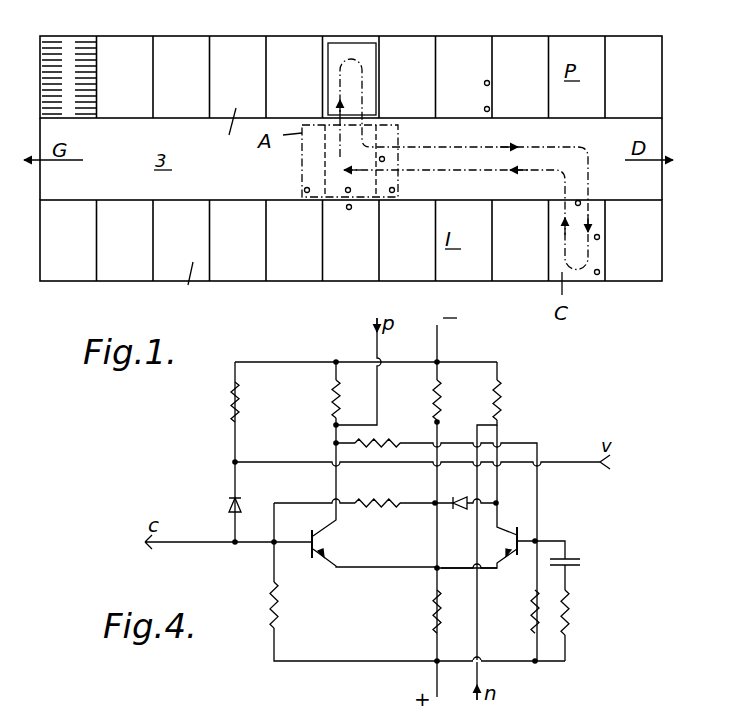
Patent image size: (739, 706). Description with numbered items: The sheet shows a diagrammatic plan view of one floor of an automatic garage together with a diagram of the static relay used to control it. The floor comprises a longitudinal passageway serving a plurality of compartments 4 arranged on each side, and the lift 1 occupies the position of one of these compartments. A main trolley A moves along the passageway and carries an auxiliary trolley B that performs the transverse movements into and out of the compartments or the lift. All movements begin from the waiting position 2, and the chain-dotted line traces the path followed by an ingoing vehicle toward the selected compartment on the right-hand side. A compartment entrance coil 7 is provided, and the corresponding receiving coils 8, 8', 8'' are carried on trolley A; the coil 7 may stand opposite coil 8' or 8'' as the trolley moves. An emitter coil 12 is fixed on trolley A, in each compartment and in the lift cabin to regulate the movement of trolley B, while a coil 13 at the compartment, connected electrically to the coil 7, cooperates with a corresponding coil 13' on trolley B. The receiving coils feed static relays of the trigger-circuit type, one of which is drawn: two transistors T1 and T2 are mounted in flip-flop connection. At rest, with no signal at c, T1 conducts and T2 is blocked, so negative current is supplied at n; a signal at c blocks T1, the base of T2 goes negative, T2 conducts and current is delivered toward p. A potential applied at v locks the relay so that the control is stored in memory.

In FIG. 1, the lift 1 is at (335, 63).
In FIG. 1, the waiting position 2 is at (333, 163).
In FIG. 1, the compartment 4 is at (203, 211).
In FIG. 1, the compartment entrance coil 7 is at (349, 210).
In FIG. 1, the receiving coil 8 is at (357, 183).
In FIG. 1, the receiving coil 8' is at (277, 187).
In FIG. 1, the receiving coil 8'' is at (412, 183).
In FIG. 1, the emitter coil 12 is at (385, 157).
In FIG. 1, the coil for front of compartment 13 is at (503, 105).
In FIG. 1, the corresponding coil on trolley B 13' is at (617, 263).
In FIG. 4, the transistor T1 is at (364, 560).
In FIG. 4, the transistor T2 is at (507, 594).